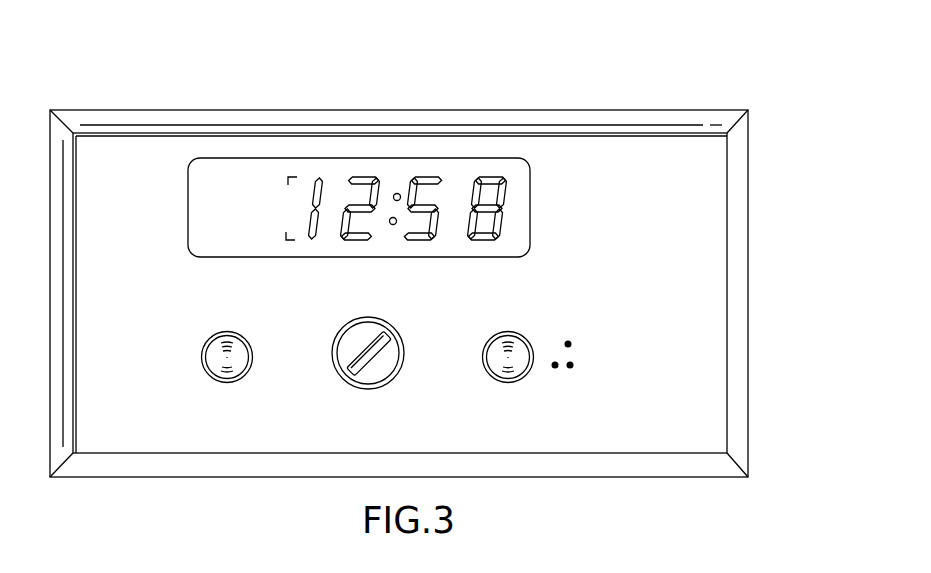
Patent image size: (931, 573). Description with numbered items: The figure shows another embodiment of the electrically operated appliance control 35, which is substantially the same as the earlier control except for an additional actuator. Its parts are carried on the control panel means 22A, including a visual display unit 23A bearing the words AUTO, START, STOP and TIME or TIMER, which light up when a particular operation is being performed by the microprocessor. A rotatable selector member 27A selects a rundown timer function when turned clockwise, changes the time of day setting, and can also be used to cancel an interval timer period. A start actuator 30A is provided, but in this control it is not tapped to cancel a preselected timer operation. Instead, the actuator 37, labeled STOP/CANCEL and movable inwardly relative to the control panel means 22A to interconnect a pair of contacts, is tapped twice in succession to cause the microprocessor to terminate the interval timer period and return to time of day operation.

The electrically operated appliance control 35 is at (399, 250).
The control panel means 22A is at (715, 258).
The visual display unit 23A is at (530, 200).
The start actuator 30A is at (233, 345).
The selector member 27A is at (380, 370).
The actuator 37 is at (520, 345).